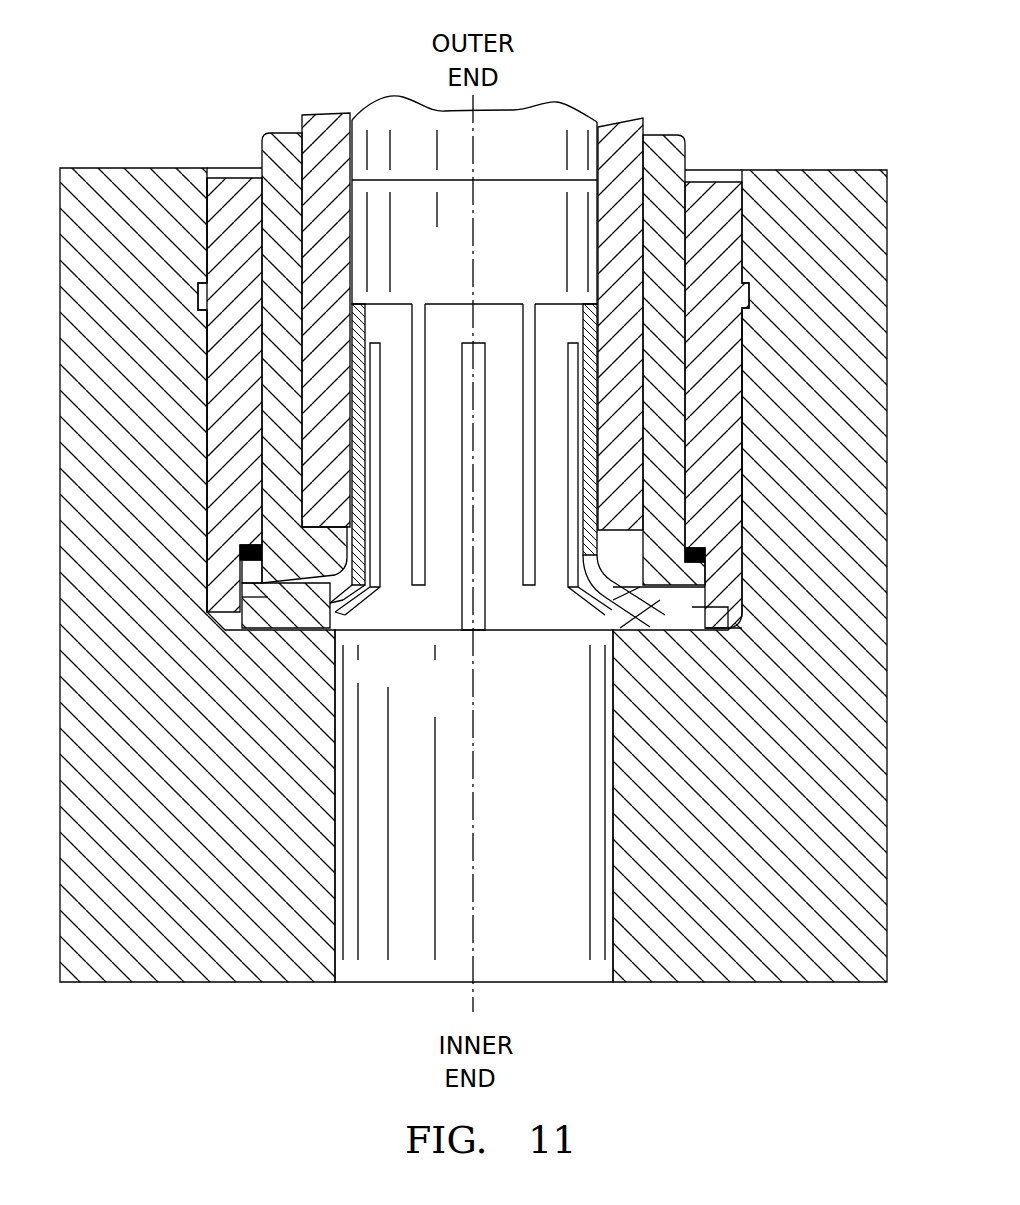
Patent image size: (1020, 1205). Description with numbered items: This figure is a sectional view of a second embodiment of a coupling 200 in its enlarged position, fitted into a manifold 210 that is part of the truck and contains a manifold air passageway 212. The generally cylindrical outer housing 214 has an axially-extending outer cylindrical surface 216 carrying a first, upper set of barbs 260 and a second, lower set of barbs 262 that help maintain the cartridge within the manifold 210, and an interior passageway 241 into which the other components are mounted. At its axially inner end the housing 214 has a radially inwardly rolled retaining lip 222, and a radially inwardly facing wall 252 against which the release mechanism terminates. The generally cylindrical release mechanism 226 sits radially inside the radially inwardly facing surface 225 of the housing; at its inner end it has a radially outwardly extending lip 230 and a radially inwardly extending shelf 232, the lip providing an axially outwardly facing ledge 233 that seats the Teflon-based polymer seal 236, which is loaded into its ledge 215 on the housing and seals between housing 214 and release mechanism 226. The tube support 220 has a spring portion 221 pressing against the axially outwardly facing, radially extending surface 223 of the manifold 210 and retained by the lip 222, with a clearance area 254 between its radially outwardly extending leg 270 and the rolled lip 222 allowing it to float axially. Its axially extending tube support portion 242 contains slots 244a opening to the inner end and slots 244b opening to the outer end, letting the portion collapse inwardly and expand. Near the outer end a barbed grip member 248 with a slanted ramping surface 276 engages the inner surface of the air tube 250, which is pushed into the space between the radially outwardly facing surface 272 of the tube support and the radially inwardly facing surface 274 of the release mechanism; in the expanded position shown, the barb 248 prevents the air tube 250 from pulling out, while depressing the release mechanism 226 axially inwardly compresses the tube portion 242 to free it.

The coupling 200 is at (740, 79).
The manifold 210 is at (747, 948).
The manifold air passageway 212 is at (578, 708).
The housing 214 is at (231, 209).
The ledge 215 is at (710, 543).
The outer cylindrical surface 216 is at (206, 278).
The tube support 220 is at (563, 312).
The spring portion 221 is at (360, 570).
The retaining lip 222 is at (333, 605).
The radially extending surface 223 is at (655, 633).
The inner surface 225 is at (675, 150).
The release mechanism 226 is at (278, 134).
The radially outwardly extending lip 230 is at (242, 596).
The radially inwardly extending shelf 232 is at (345, 548).
The ledge 233 is at (240, 552).
The seal 236 is at (742, 520).
The interior passageway 241 is at (330, 585).
The tube support portion 242 is at (447, 320).
The slots 244a is at (478, 567).
The slots 244b is at (528, 303).
The barbed grip member 248 is at (746, 300).
The air tube 250 is at (612, 158).
The radially inwardly facing wall 252 is at (263, 611).
The clearance area 254 is at (735, 628).
The first set of barbs 260 is at (198, 300).
The second set of barbs 262 is at (199, 431).
The radially outwardly extending leg 270 is at (728, 608).
The radially outwardly facing surface 272 is at (605, 405).
The radially inwardly facing surface 274 is at (616, 165).
The ramping surface 276 is at (338, 320).